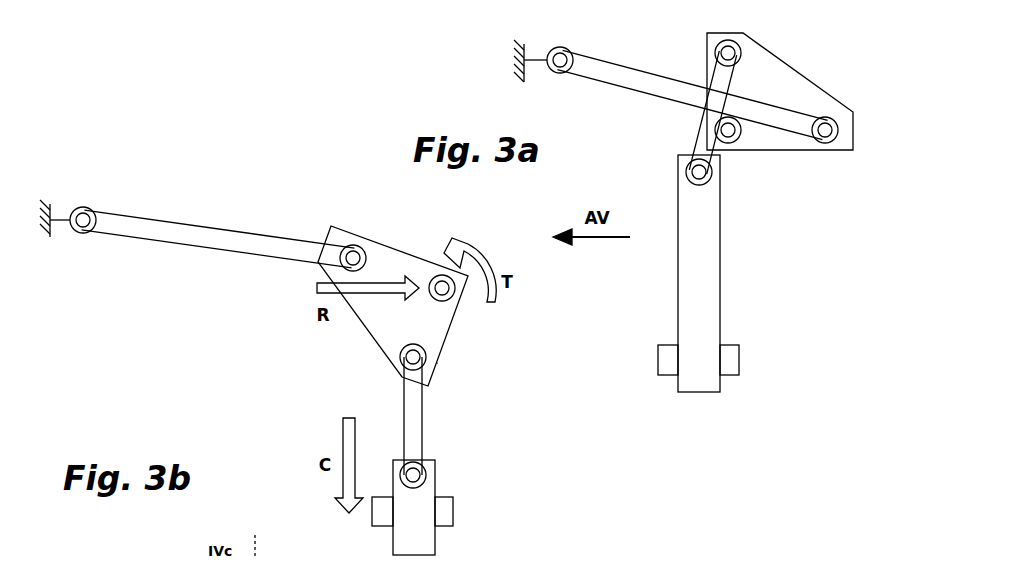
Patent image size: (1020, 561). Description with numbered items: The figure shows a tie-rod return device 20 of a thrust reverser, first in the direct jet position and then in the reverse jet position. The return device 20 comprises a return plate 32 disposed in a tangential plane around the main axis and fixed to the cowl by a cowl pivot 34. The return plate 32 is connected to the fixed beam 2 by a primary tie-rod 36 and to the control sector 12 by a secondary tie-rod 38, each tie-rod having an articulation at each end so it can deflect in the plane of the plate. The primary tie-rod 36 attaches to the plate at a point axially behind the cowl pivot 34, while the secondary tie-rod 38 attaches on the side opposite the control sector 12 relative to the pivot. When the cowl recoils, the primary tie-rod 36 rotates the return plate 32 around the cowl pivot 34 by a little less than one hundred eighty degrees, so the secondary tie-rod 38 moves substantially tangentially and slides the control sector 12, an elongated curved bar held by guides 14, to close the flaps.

In FIG. 3A, the fixed beam 2 is at (527, 68).
In FIG. 3B, the fixed beam 2 is at (52, 236).
In FIG. 3A, the control sector 12 is at (720, 271).
In FIG. 3B, the control sector 12 is at (435, 470).
In FIG. 3A, the guides 14 is at (739, 360).
In FIG. 3B, the guides 14 is at (455, 512).
In FIG. 3A, the return device 20 is at (832, 68).
In FIG. 3B, the return device 20 is at (547, 221).
In FIG. 3A, the return plate 32 is at (811, 152).
In FIG. 3B, the return plate 32 is at (437, 363).
In FIG. 3A, the cowl pivot 34 is at (740, 140).
In FIG. 3B, the cowl pivot 34 is at (451, 295).
In FIG. 3A, the primary tie-rod 36 is at (643, 74).
In FIG. 3B, the primary tie-rod 36 is at (221, 230).
In FIG. 3A, the secondary tie-rod 38 is at (703, 132).
In FIG. 3B, the secondary tie-rod 38 is at (405, 407).